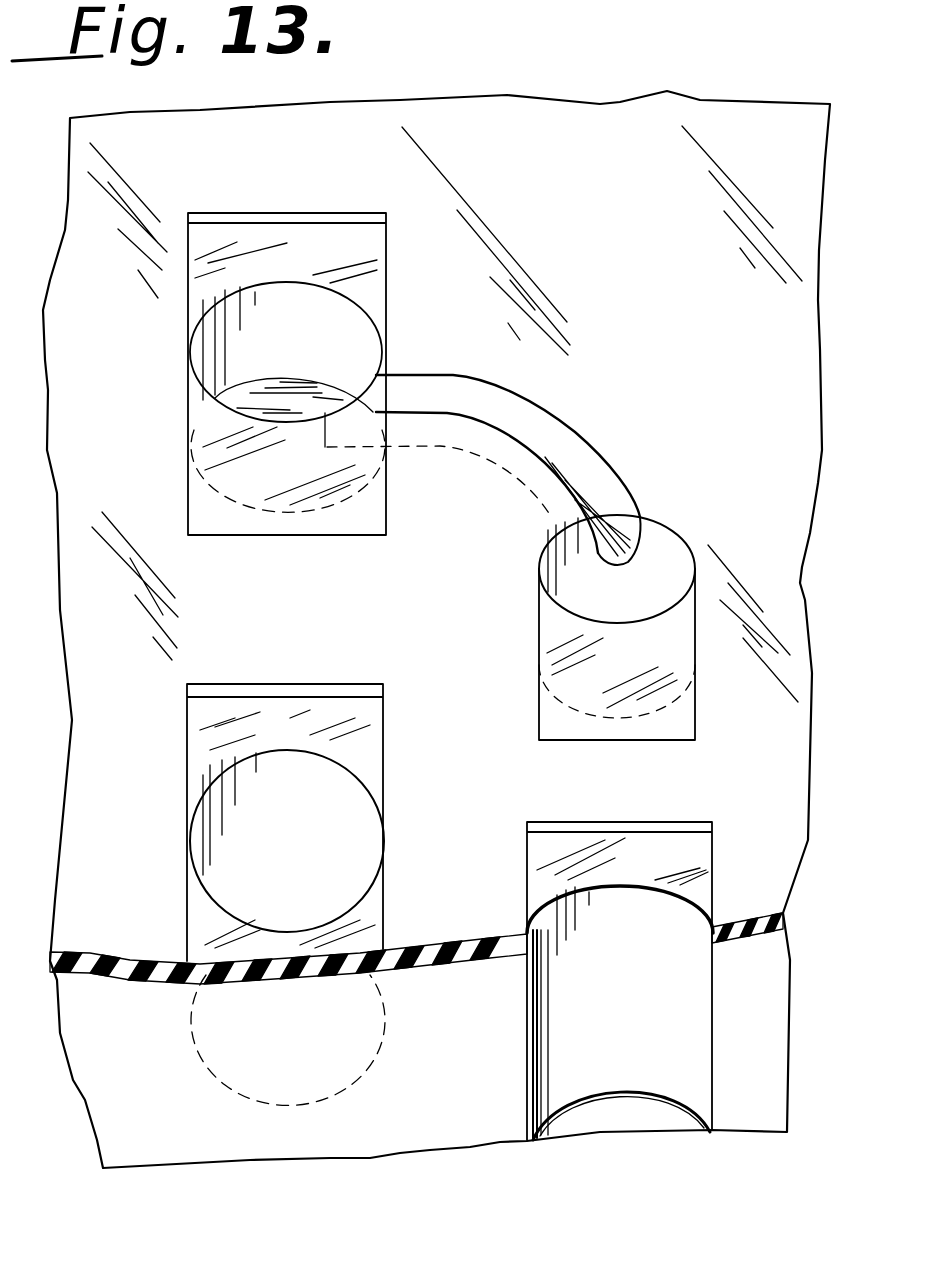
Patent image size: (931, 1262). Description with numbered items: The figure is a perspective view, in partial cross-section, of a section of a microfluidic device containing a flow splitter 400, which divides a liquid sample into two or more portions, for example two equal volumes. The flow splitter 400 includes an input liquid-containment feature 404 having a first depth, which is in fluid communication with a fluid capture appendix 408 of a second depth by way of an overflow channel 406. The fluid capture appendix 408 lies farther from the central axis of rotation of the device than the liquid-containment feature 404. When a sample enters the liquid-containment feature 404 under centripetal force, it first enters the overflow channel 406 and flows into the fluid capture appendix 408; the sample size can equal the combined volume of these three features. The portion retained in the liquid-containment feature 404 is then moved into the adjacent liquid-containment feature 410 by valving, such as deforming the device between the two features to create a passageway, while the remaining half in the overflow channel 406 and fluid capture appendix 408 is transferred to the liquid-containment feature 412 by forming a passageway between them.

The flow splitter 400 is at (358, 190).
The input liquid-containment feature 404 is at (322, 382).
The overflow channel 406 is at (557, 428).
The fluid capture appendix 408 is at (540, 575).
The liquid-containment feature 410 is at (348, 812).
The liquid-containment feature 412 is at (572, 1007).